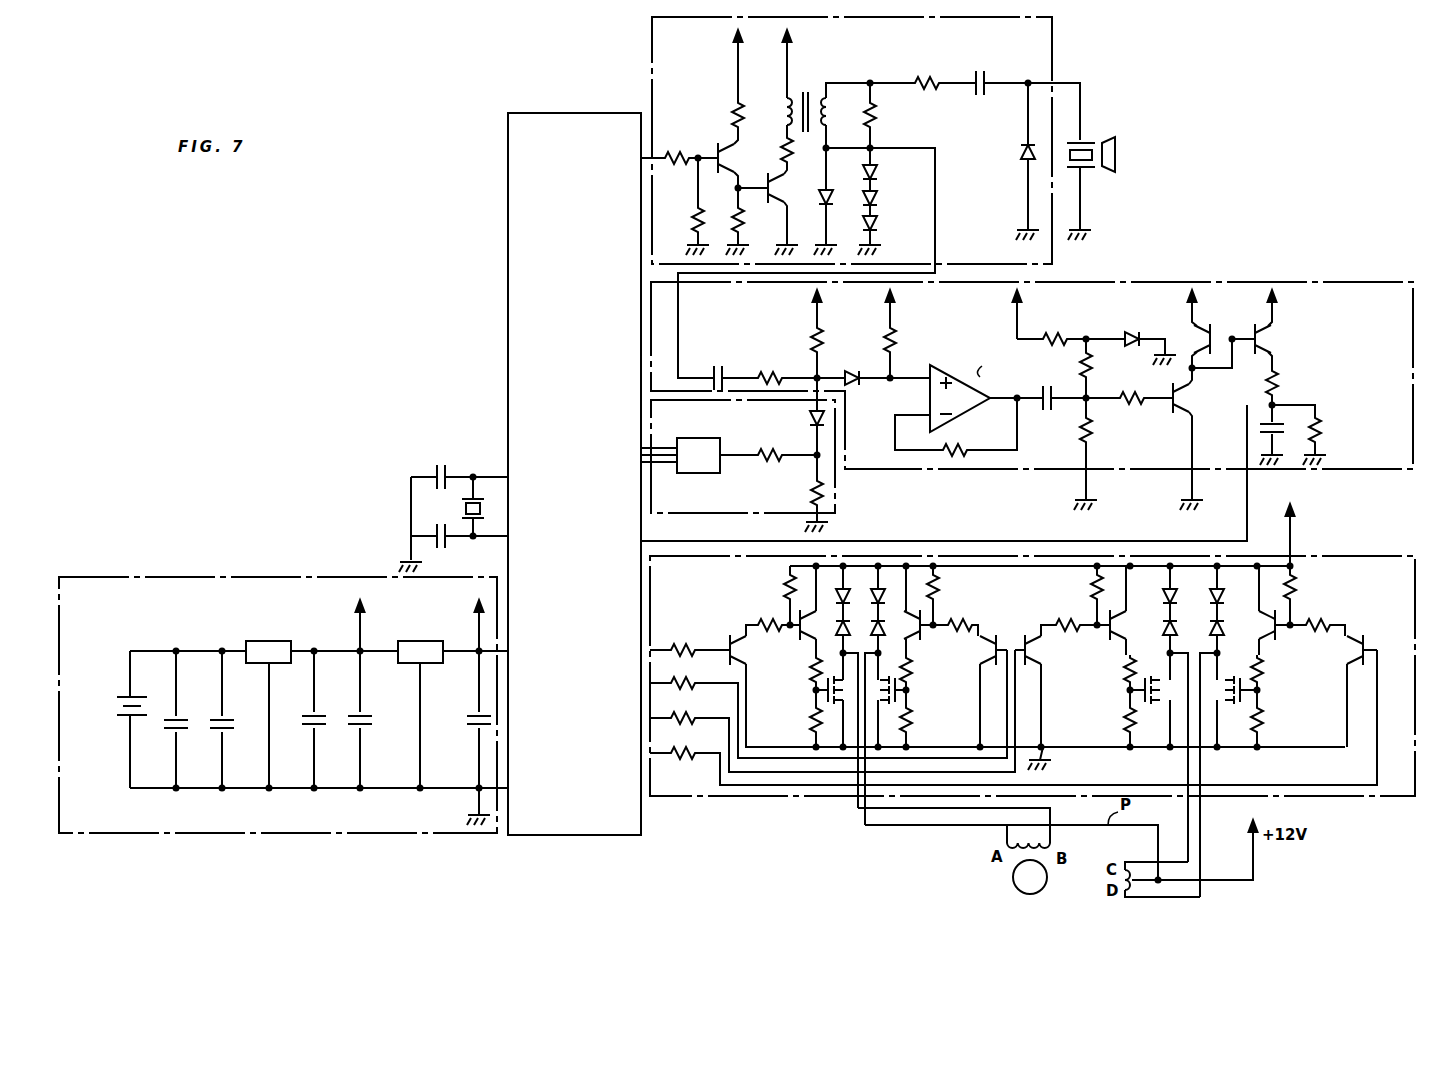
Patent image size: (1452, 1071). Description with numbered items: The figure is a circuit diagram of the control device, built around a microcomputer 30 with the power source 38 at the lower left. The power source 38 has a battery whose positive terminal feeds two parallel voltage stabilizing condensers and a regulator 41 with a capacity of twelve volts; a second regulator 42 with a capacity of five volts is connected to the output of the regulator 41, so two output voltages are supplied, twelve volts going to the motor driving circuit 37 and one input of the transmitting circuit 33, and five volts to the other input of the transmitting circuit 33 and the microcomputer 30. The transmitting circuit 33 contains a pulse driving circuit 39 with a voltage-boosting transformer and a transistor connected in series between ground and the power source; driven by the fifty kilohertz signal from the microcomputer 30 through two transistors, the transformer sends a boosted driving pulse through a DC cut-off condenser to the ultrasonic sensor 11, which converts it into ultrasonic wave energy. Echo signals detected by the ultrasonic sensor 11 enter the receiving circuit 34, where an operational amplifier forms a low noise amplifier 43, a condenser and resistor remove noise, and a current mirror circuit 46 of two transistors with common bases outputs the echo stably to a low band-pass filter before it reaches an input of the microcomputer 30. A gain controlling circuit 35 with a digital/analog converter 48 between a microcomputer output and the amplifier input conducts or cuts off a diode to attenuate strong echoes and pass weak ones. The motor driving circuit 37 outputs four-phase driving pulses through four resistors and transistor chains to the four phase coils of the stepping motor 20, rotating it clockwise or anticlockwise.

The ultrasonic sensor 11 is at (1116, 153).
The stepping motor 20 is at (1012, 878).
The microcomputer 30 is at (580, 113).
The transmitting circuit 33 is at (899, 197).
The receiving circuit 34 is at (1032, 369).
The gain controlling circuit 35 is at (771, 455).
The motor driving circuit 37 is at (1368, 556).
The power source 38 is at (283, 669).
The pulse driving circuit 39 is at (815, 86).
The regulator 41 is at (270, 641).
The regulator 42 is at (421, 641).
The low noise amplifier 43 is at (908, 376).
The current mirror circuit 46 is at (1225, 334).
The digital/analog converter 48 is at (697, 473).